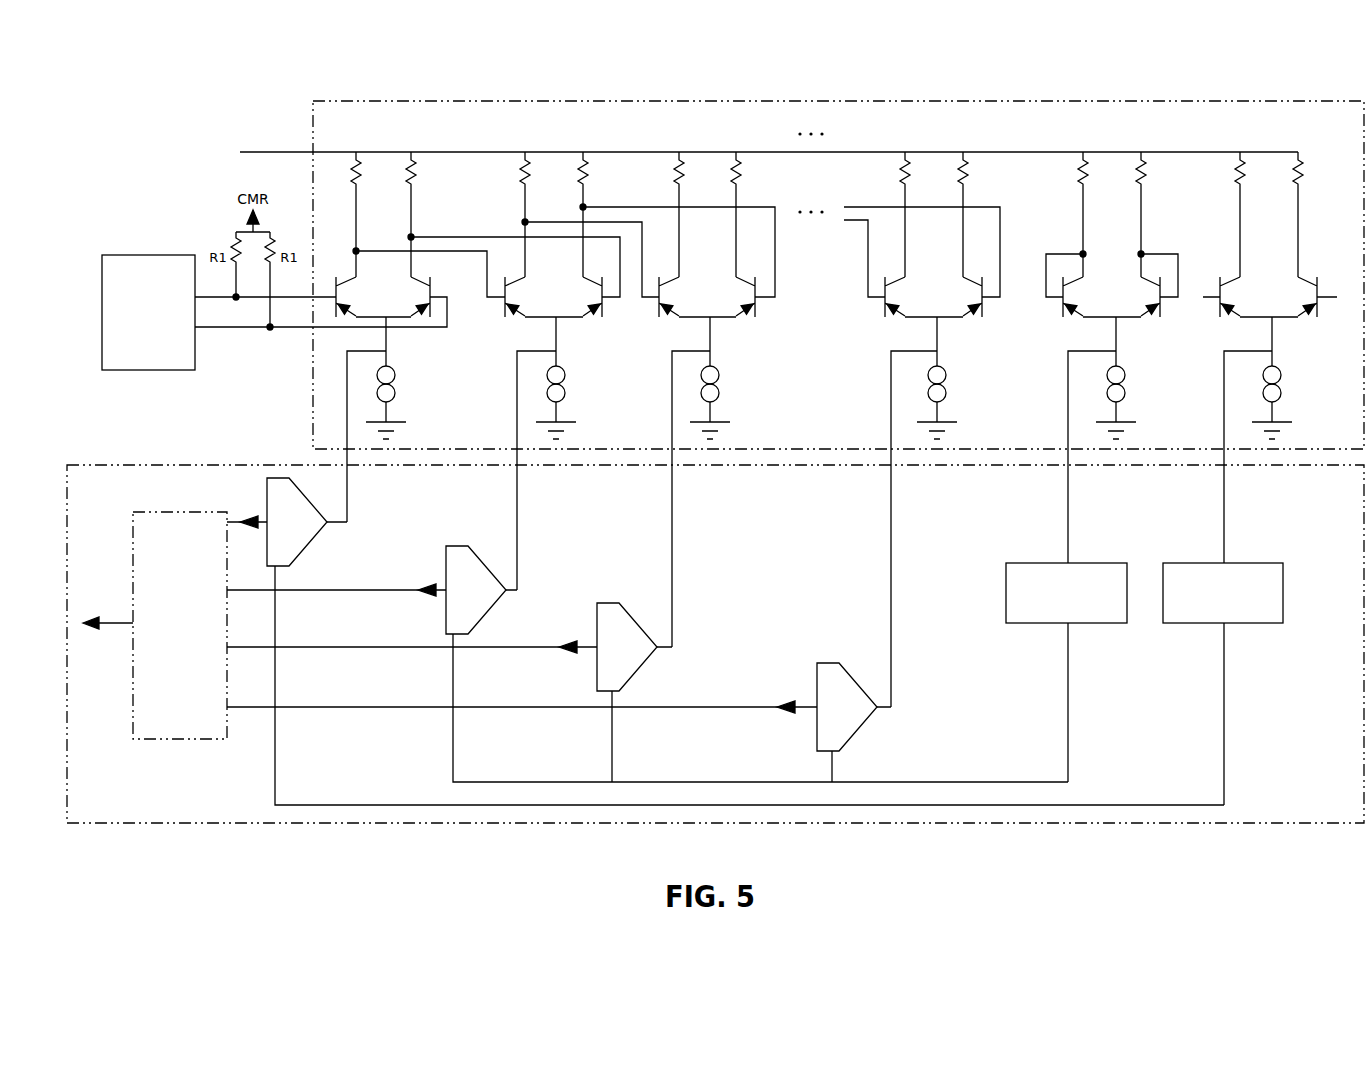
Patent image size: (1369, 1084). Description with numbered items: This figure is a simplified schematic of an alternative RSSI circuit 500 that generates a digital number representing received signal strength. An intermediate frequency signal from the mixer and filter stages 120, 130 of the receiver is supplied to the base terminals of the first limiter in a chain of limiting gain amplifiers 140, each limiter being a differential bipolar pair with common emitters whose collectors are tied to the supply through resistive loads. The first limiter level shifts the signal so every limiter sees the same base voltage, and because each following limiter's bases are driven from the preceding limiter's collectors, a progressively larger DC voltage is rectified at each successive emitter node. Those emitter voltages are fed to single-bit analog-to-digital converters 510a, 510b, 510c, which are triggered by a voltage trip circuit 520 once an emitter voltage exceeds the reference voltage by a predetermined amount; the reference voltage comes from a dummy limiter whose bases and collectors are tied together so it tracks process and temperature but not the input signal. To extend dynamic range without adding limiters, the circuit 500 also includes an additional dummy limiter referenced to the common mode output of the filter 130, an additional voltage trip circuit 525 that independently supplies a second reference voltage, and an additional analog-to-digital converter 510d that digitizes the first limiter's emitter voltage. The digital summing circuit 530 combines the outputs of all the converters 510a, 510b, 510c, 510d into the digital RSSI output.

The chain of limiting gain amplifiers 140 is at (360, 98).
The mixer stage 120 is at (137, 299).
The filter stage 130 is at (168, 252).
The RSSI circuit 500 is at (131, 464).
The analog-to-digital converter 510a is at (647, 664).
The analog-to-digital converter 510b is at (449, 692).
The analog-to-digital converter 510c is at (559, 722).
The additional analog-to-digital converter 510d is at (725, 641).
The voltage trip circuit 520 is at (1066, 672).
The additional voltage trip circuit 525 is at (1223, 684).
The digital summing circuit 530 is at (150, 625).